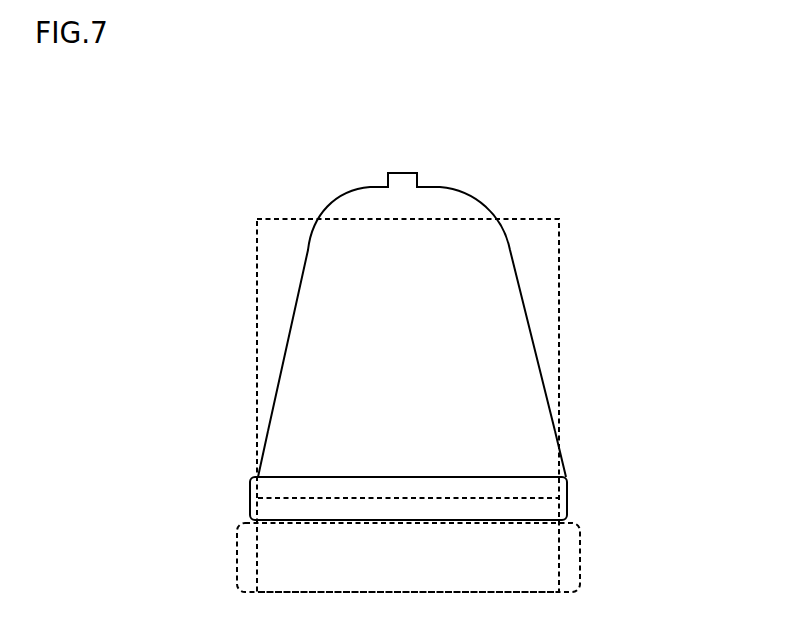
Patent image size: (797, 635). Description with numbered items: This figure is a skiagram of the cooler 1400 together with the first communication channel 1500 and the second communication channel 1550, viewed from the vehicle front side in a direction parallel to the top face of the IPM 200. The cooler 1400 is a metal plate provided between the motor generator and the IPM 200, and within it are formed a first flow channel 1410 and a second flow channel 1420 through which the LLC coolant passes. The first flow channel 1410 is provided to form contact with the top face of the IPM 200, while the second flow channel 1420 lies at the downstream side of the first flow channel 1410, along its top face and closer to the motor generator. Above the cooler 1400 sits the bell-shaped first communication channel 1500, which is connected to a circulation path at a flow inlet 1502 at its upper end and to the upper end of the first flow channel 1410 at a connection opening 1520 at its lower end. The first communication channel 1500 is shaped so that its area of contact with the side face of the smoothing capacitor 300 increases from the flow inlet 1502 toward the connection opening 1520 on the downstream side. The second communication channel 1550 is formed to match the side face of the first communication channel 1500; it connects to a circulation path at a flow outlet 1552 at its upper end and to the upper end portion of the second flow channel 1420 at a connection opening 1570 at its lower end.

The first communication channel 1500 is at (343, 225).
The second communication channel 1550 is at (295, 300).
The flow inlet 1502 is at (337, 138).
The flow outlet 1552 is at (403, 173).
The connection opening 1520 is at (347, 443).
The connection opening 1570 is at (295, 476).
The smoothing capacitor 300 is at (560, 292).
The cooler 1400 is at (567, 496).
The second flow channel 1420 is at (550, 491).
The first flow channel 1410 is at (550, 510).
The IPM 200 is at (580, 558).